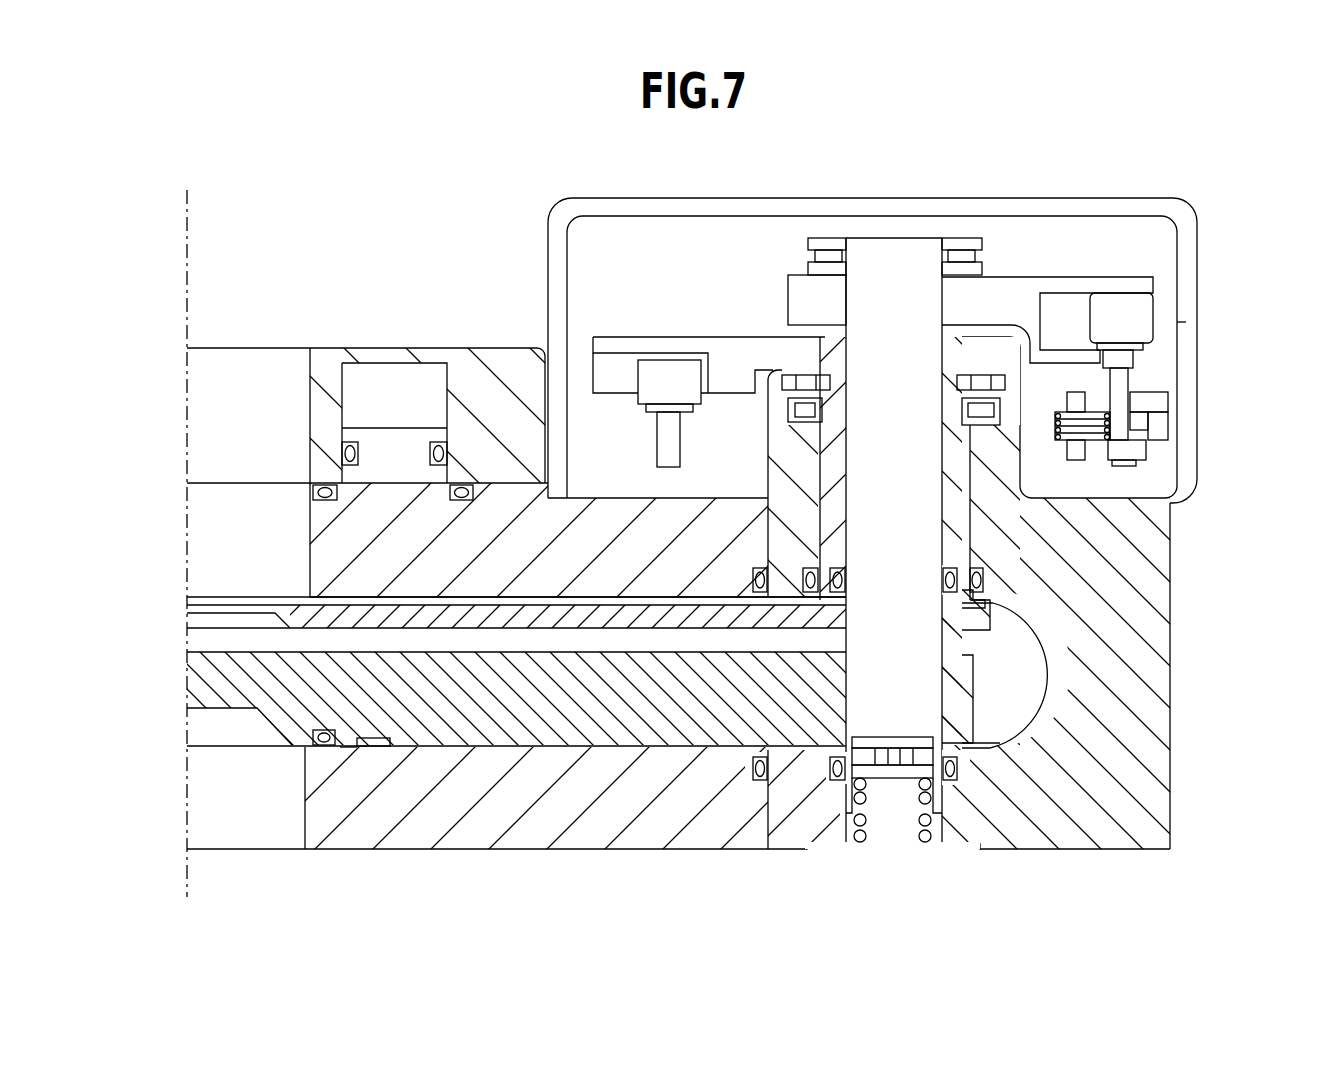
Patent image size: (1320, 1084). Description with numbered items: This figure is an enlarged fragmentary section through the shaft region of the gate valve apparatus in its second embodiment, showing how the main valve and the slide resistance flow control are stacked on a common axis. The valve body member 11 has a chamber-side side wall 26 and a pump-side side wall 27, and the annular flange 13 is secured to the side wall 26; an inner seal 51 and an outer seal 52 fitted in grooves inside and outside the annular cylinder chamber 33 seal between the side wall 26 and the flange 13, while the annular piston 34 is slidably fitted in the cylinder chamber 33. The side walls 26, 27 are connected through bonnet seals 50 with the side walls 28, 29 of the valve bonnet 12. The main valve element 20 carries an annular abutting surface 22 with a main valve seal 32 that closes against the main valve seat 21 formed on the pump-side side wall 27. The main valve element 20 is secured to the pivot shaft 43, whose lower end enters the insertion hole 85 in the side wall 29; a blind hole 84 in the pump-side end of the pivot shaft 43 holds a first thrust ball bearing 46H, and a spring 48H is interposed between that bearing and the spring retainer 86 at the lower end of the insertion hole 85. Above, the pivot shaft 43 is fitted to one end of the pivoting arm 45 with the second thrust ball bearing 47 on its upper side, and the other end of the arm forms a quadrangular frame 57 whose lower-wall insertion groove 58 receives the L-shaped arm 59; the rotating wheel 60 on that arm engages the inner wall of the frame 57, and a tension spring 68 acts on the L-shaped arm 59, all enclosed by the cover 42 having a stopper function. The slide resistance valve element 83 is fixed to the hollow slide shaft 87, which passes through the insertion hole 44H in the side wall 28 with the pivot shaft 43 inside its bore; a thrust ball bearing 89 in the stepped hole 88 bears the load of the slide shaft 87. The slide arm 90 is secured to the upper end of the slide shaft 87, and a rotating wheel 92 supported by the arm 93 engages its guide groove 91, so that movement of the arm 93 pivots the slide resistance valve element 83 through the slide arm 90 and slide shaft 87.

The valve body member 11 is at (552, 850).
The valve bonnet 12 is at (1068, 850).
The flange 13 is at (494, 346).
The main valve element 20 is at (222, 690).
The main valve seat 21 is at (372, 724).
The abutting surface 22 is at (372, 724).
The chamber-side side wall 26 is at (513, 557).
The pump-side side wall 27 is at (520, 819).
The side wall 28 is at (1028, 590).
The side wall 29 is at (1073, 814).
The main valve seal 32 is at (320, 748).
The annular cylinder chamber 33 is at (340, 395).
The annular piston 34 is at (390, 455).
The cover 42 is at (1135, 197).
The pivot shaft 43 is at (905, 680).
The insertion hole 44H is at (975, 555).
The pivoting arm 45 is at (1010, 297).
The first thrust ball bearing 46H is at (890, 782).
The second thrust ball bearing 47 is at (988, 256).
The spring 48H is at (868, 852).
The bonnet seals 50 is at (750, 582).
The inner seal 51 is at (312, 498).
The outer seal 52 is at (458, 480).
The quadrangular frame 57 is at (1092, 290).
The insertion groove 58 is at (1135, 357).
The L-shaped arm 59 is at (1125, 383).
The rotating wheel 60 is at (1178, 322).
The tension spring 68 is at (1062, 440).
The slide resistance valve element 83 is at (300, 615).
The blind hole 84 is at (938, 812).
The insertion hole 85 is at (860, 844).
The spring retainer 86 is at (938, 848).
The slide shaft 87 is at (958, 545).
The stepped hole 88 is at (808, 415).
The thrust ball bearing 89 is at (984, 432).
The slide arm 90 is at (728, 355).
The guide groove 91 is at (612, 373).
The rotating wheel 92 is at (668, 378).
The arm 93 is at (680, 440).